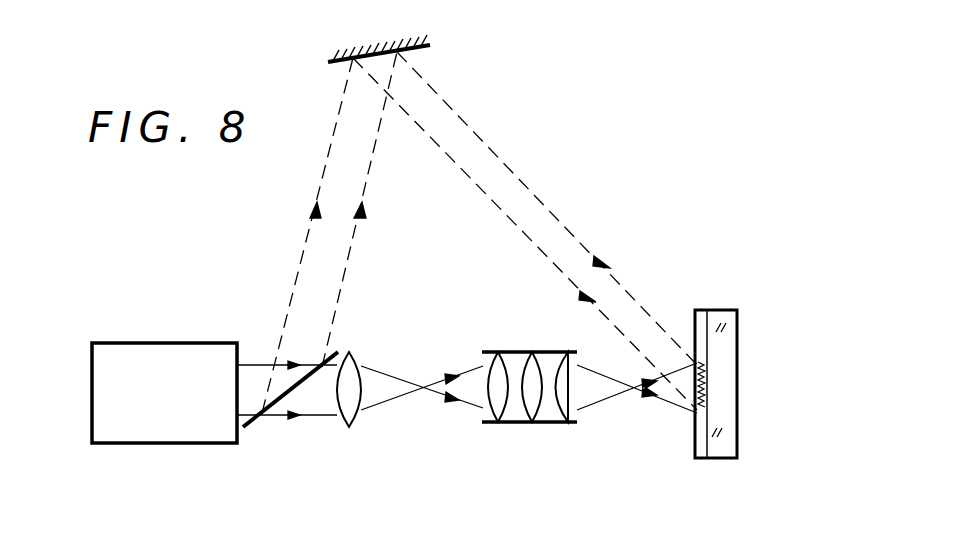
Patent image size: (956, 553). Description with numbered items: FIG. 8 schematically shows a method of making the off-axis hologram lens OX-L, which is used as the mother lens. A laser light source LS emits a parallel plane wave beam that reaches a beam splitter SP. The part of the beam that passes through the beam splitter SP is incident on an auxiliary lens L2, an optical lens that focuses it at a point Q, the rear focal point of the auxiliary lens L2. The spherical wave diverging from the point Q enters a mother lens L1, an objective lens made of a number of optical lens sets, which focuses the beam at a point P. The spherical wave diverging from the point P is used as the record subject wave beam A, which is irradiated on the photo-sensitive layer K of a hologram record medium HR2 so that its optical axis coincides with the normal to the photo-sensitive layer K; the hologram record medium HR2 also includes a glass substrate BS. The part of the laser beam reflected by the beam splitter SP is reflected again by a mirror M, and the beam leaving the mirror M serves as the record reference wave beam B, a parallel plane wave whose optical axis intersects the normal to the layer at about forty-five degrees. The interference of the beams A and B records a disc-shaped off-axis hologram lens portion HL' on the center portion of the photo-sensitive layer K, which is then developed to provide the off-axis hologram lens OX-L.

The laser light source LS is at (196, 446).
The beam splitter SP is at (330, 350).
The auxiliary lens L2 is at (347, 429).
The rear focal point of lens L2 Q is at (426, 382).
The mother lens L1 is at (511, 352).
The focal point of mother lens P is at (618, 400).
The record subject wave beam A is at (642, 398).
The mirror M is at (420, 50).
The record reference wave beam B is at (634, 294).
The hologram record medium HR2 is at (730, 335).
The photo-sensitive layer K is at (701, 318).
The glass substrate BS is at (725, 318).
The off-axis hologram lens portion HL' is at (766, 386).
The off-axis hologram lens OX-L is at (722, 467).